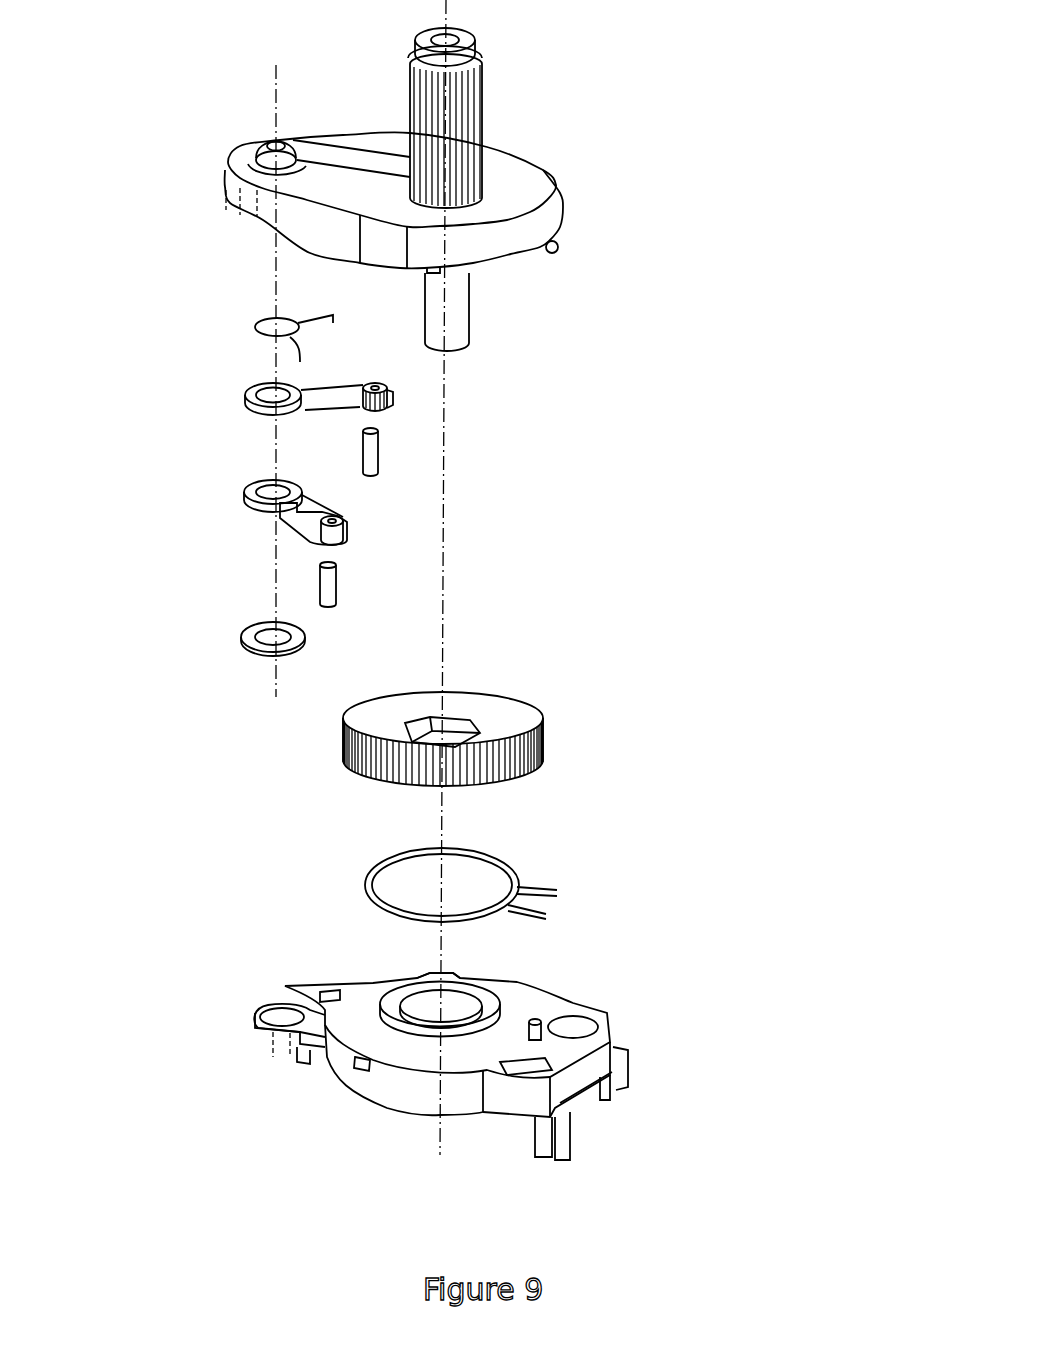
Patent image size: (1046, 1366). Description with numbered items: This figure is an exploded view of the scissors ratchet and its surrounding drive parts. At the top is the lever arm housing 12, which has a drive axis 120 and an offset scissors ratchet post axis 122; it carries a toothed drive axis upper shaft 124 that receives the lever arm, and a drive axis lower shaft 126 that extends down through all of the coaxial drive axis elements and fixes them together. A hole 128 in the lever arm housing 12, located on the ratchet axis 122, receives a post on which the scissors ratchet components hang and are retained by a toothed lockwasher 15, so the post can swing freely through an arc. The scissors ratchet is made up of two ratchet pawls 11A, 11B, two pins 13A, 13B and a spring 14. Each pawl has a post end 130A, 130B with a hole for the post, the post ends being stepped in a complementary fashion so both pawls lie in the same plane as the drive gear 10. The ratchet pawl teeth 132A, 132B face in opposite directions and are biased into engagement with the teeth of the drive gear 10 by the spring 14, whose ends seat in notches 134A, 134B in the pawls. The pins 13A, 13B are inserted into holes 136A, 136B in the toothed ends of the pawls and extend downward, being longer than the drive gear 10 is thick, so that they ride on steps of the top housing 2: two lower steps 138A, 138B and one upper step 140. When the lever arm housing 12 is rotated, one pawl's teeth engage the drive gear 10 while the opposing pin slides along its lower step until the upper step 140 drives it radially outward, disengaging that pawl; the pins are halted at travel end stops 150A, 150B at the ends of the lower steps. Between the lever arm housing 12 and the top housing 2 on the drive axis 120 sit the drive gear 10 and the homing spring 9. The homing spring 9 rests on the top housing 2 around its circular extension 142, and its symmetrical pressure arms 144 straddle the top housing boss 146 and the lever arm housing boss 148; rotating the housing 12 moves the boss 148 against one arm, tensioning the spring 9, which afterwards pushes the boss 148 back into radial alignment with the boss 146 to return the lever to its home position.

The top housing 2 is at (613, 1047).
The homing spring 9 is at (560, 888).
The drive gear 10 is at (545, 725).
The lever arm housing 12 is at (565, 208).
The spring 14 is at (256, 325).
The toothed lockwasher 15 is at (240, 632).
The ratchet pawl 11A is at (263, 387).
The ratchet pawl 11B is at (250, 490).
The pin 13A is at (378, 450).
The pin 13B is at (320, 587).
The drive axis 120 is at (447, 15).
The scissors ratchet post axis 122 is at (274, 66).
The toothed drive axis upper shaft 124 is at (485, 120).
The drive axis lower shaft 126 is at (469, 307).
The hole 128 is at (268, 133).
The post end 130A is at (258, 390).
The post end 130B is at (262, 487).
The ratchet pawl teeth 132A is at (392, 395).
The ratchet pawl teeth 132B is at (350, 525).
The notch 134A is at (330, 385).
The notch 134B is at (287, 523).
The hole 136A is at (375, 384).
The hole 136B is at (345, 517).
The lower step 138A is at (420, 977).
The lower step 138B is at (360, 1068).
The upper step 140 is at (325, 1008).
The top housing circular extension 142 is at (487, 1010).
The pressure arms 144 is at (557, 892).
The top housing boss 146 is at (540, 1022).
The lever arm housing boss 148 is at (557, 242).
The travel end stop 150A is at (452, 976).
The travel end stop 150B is at (370, 1071).